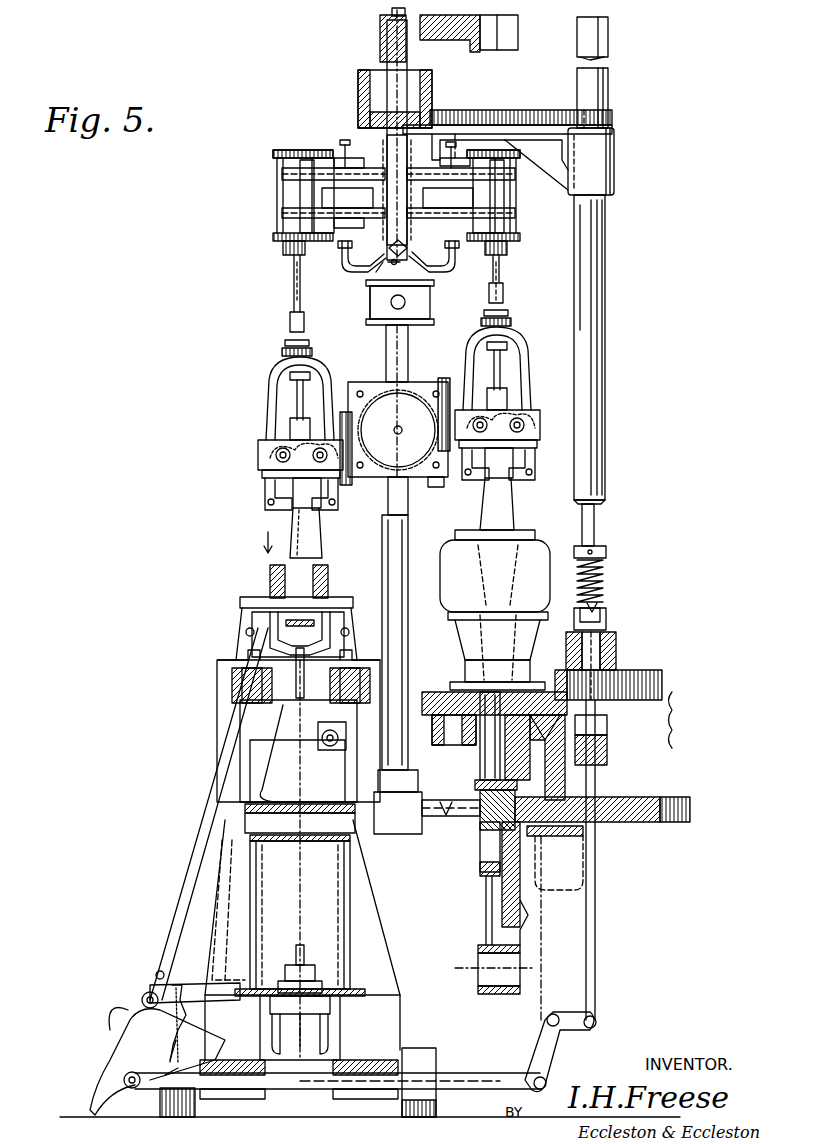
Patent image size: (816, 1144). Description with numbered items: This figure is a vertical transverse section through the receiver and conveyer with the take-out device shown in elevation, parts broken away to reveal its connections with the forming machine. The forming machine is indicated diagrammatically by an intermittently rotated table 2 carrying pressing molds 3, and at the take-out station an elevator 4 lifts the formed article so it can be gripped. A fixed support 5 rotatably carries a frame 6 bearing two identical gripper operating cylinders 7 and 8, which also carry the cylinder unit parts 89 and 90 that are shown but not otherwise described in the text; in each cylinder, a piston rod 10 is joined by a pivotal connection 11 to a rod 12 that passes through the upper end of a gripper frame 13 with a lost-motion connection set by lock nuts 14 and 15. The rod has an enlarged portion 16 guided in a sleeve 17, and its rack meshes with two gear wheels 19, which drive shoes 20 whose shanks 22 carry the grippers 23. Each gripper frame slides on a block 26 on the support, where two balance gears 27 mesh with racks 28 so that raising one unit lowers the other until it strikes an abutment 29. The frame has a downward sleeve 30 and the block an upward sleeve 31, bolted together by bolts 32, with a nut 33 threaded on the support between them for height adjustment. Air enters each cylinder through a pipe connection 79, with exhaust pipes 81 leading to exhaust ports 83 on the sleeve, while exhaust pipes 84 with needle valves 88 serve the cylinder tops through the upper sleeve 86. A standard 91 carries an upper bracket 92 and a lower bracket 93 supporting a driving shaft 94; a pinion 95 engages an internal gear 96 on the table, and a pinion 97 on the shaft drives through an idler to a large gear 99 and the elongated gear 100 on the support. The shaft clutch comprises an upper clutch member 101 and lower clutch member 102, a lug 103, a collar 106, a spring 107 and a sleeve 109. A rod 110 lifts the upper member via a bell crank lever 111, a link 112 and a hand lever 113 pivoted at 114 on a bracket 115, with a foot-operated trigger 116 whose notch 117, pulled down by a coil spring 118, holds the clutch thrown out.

The table 2 is at (690, 732).
The pressing mold 3 is at (538, 550).
The elevator 4 is at (502, 764).
The support 5 is at (410, 526).
The frame 6 is at (380, 150).
The gripper operating cylinder 7 is at (522, 208).
The gripper operating cylinder 8 is at (277, 195).
The piston rod 10 is at (292, 275).
The pivotal connection 11 is at (535, 292).
The rod 12 is at (310, 342).
The frame 13 is at (268, 378).
The lock nut 14 is at (282, 352).
The lock nut 15 is at (310, 378).
The enlarged portion 16 is at (505, 378).
The sleeve 17 is at (268, 416).
The gear wheel 19 is at (258, 440).
The shoe 20 is at (262, 474).
The shank 22 is at (265, 492).
The gripper 23 is at (265, 510).
The block 26 is at (366, 382).
The gear 27 is at (416, 482).
The rack 28 is at (438, 384).
The abutment 29 is at (356, 488).
The sleeve 30 is at (386, 248).
The sleeve 31 is at (410, 340).
The bolt 32 is at (432, 296).
The nut 33 is at (372, 310).
The pipe connection 79 is at (342, 262).
The exhaust pipe 81 is at (296, 285).
The exhaust port 83 is at (385, 264).
The exhaust pipe 84 is at (335, 152).
The sleeve 86 is at (494, 158).
The needle valve 88 is at (340, 140).
The clutch disc 89 is at (300, 208).
The clutch hub 90 is at (310, 200).
The standard 91 is at (606, 210).
The bracket 92 is at (614, 154).
The bracket 93 is at (616, 648).
The driving shaft 94 is at (596, 536).
The pinion 95 is at (592, 700).
The internal gear 96 is at (664, 692).
The pinion 97 is at (578, 105).
The large gear 99 is at (455, 100).
The gear 100 is at (358, 96).
The upper clutch member 101 is at (606, 614).
The lower clutch member 102 is at (606, 624).
The lug 103 is at (592, 610).
The collar 106 is at (606, 552).
The spring 107 is at (604, 566).
The sleeve 109 is at (600, 640).
The rod 110 is at (596, 852).
The bell crank lever 111 is at (540, 1038).
The link 112 is at (508, 1073).
The hand lever 113 is at (182, 897).
The pivot 114 is at (142, 998).
The bracket 115 is at (178, 985).
The foot-operated trigger 116 is at (105, 1030).
The notch 117 is at (225, 910).
The coil spring 118 is at (140, 1058).